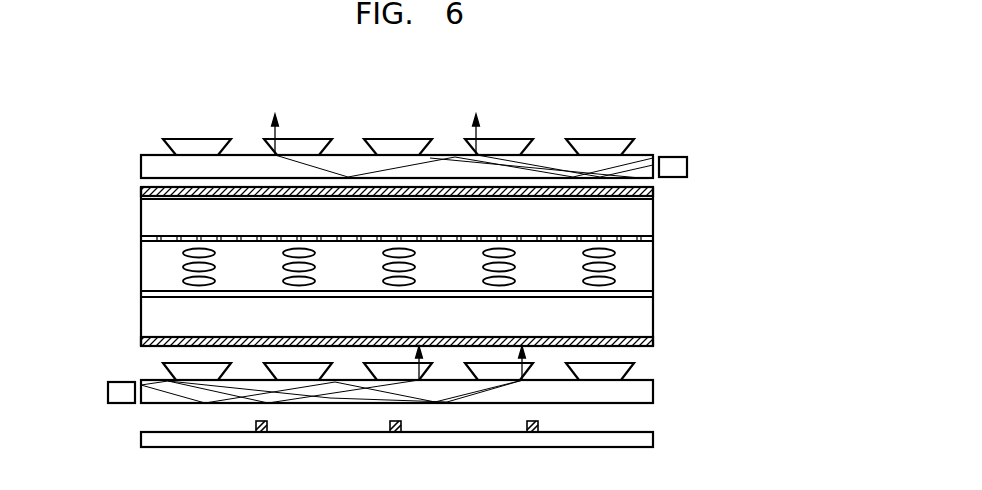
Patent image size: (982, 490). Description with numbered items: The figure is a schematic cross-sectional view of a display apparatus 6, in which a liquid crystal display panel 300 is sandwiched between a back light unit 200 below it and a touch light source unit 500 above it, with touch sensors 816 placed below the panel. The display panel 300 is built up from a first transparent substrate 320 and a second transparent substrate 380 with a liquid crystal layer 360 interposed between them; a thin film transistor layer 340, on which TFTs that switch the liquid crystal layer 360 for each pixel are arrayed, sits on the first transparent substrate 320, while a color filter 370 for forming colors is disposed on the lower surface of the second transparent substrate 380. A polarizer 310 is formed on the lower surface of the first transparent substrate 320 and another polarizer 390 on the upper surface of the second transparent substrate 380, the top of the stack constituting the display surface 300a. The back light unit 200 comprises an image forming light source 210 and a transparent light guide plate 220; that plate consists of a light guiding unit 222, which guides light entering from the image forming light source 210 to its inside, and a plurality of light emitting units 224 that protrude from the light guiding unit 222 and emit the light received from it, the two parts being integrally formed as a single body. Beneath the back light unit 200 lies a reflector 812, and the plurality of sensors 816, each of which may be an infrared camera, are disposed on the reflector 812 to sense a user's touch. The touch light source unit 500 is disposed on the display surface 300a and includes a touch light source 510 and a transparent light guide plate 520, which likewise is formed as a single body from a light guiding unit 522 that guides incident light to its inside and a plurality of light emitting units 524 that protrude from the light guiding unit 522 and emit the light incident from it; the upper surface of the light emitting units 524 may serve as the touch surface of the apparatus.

The display apparatus 6 is at (163, 104).
The touch light source unit 500 is at (132, 137).
The touch light source 510 is at (688, 167).
The transparent light guide plate 520 is at (711, 147).
The light guiding unit 522 is at (655, 160).
The light emitting units 524 is at (638, 139).
The display panel 300 is at (132, 188).
The display surface 300a is at (653, 190).
The polarizer 390 is at (653, 198).
The second transparent substrate 380 is at (653, 219).
The color filter 370 is at (653, 238).
The liquid crystal layer 360 is at (653, 270).
The thin film transistor layer 340 is at (653, 294).
The first transparent substrate 320 is at (653, 320).
The polarizer 310 is at (653, 341).
The back light unit 200 is at (103, 363).
The image forming light source 210 is at (125, 382).
The transparent light guide plate 220 is at (702, 360).
The light guiding unit 222 is at (653, 392).
The light emitting units 224 is at (633, 365).
The reflector 812 is at (654, 439).
The sensors 816 is at (262, 433).